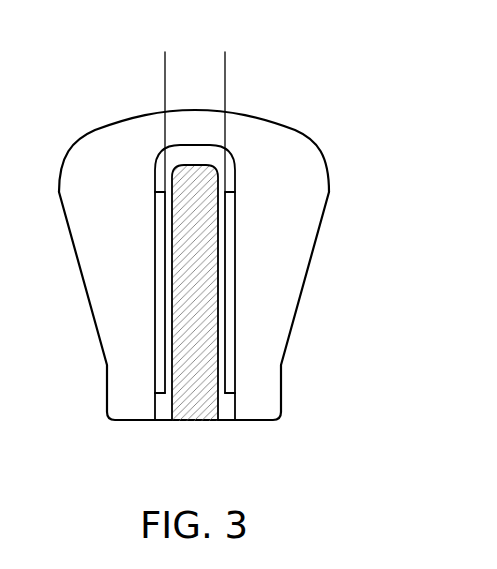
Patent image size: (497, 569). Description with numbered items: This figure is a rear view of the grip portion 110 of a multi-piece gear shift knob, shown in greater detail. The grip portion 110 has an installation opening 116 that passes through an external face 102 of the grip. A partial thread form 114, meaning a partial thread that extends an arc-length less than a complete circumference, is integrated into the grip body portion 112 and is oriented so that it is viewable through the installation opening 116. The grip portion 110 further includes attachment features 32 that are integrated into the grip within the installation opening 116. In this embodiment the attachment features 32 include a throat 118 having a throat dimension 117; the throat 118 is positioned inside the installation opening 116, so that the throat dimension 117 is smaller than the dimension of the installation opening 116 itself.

The grip portion 110 is at (321, 119).
The external face 102 is at (328, 200).
The grip body portion 112 is at (311, 257).
The throat dimension 117 is at (133, 60).
The throat 118 is at (222, 323).
The installation opening 116 is at (224, 408).
The attachment features 32 is at (160, 373).
The partial thread form 114 is at (182, 420).